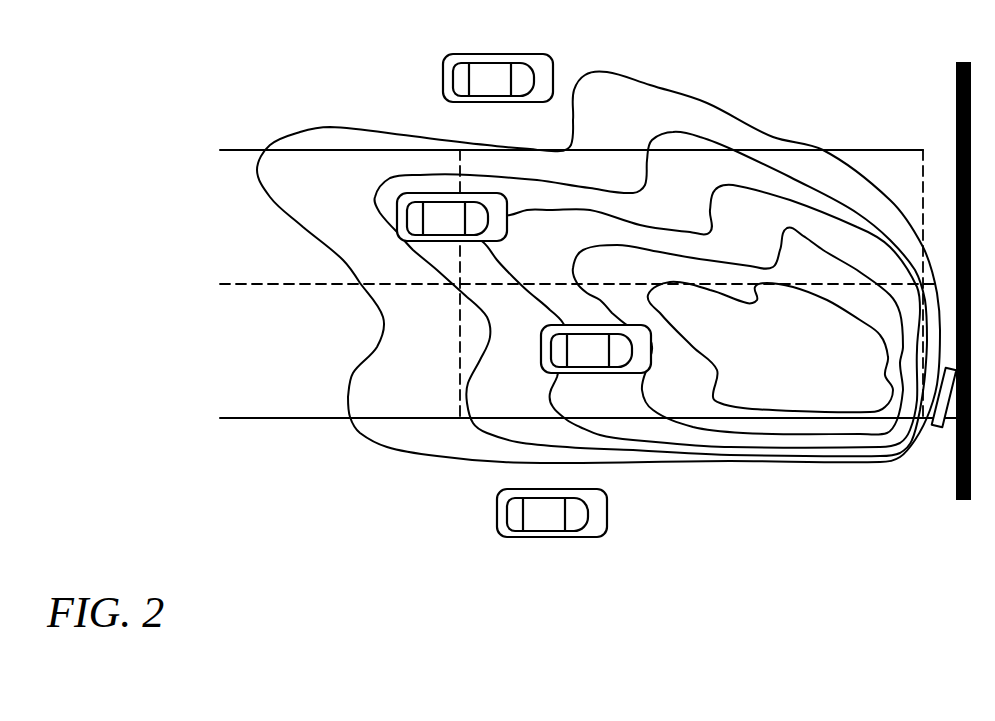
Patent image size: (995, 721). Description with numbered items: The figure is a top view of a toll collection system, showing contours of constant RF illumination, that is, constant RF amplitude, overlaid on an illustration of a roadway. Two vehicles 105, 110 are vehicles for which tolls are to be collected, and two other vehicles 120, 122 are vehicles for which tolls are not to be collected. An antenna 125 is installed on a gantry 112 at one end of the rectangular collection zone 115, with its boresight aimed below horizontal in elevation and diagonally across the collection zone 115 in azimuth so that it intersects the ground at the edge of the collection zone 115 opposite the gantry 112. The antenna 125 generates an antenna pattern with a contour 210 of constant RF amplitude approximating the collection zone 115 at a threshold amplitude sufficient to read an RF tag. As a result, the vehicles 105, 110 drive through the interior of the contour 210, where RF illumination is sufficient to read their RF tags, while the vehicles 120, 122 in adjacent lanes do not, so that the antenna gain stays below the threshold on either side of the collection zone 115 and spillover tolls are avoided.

The vehicle 105 is at (397, 207).
The vehicle 110 is at (541, 347).
The gantry 112 is at (957, 123).
The collection zone 115 is at (460, 368).
The vehicle 120 is at (442, 75).
The vehicle 122 is at (494, 521).
The antenna 125 is at (935, 428).
The contour 210 is at (460, 312).